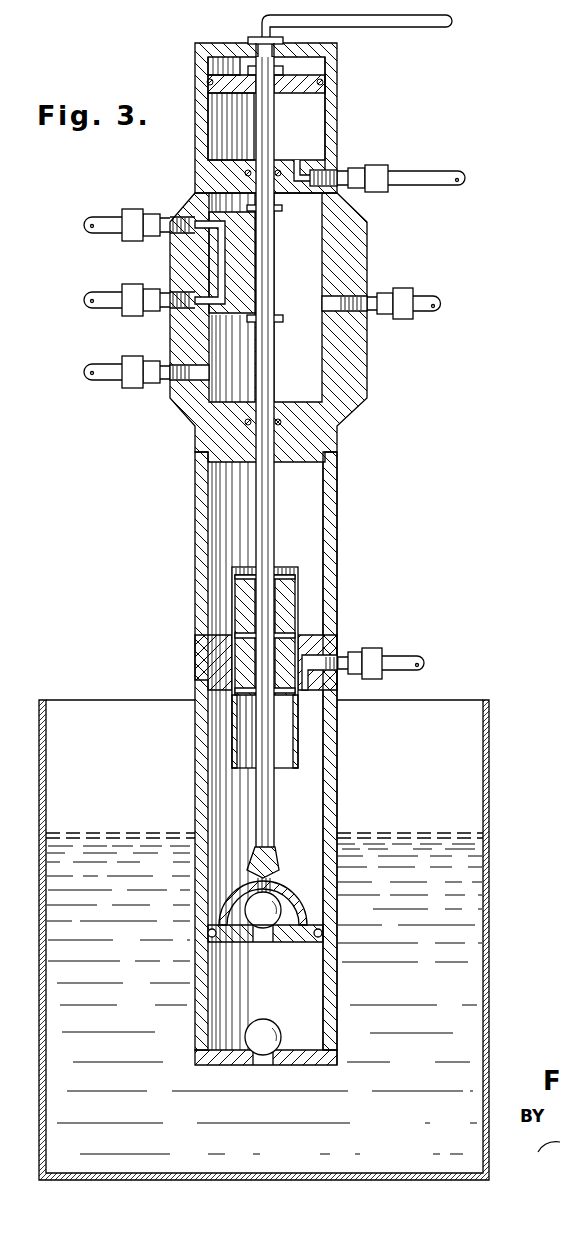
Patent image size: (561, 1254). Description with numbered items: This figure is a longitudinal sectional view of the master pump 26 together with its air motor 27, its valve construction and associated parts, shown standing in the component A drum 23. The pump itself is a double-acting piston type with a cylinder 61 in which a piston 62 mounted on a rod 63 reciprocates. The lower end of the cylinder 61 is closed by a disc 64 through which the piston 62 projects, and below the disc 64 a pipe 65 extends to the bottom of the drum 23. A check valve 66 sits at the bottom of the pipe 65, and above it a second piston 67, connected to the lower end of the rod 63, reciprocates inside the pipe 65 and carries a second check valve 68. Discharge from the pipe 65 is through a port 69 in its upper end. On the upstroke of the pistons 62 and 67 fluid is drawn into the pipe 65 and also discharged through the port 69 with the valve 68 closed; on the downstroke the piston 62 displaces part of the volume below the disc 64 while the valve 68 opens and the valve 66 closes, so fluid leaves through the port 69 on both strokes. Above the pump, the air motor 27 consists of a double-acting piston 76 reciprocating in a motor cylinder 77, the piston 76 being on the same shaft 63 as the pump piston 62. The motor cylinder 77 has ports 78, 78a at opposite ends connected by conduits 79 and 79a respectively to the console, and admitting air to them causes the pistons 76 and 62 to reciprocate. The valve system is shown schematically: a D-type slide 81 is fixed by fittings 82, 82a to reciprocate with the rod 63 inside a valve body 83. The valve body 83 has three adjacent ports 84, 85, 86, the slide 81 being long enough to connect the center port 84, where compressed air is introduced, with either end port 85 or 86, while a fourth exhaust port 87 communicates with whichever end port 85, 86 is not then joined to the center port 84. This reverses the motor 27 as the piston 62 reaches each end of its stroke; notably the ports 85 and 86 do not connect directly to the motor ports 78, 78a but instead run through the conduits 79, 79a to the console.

The component A drum 23 is at (490, 915).
The master pump 26 is at (342, 559).
The air motor 27 is at (342, 114).
The cylinder 61 is at (338, 610).
The piston 62 is at (237, 660).
The rod 63 is at (268, 554).
The disc 64 is at (209, 662).
The pipe 65 is at (334, 800).
The check valve 66 is at (273, 1030).
The second piston 67 is at (316, 928).
The second check valve 68 is at (278, 903).
The port 69 is at (341, 658).
The double-acting piston 76 is at (231, 126).
The motor cylinder 77 is at (332, 144).
The port 78 is at (296, 162).
The port 78a is at (260, 53).
The conduit 79 is at (437, 173).
The conduit 79a is at (394, 26).
The D-type slide 81 is at (248, 268).
The fitting 82 is at (270, 322).
The fitting 82a is at (272, 211).
The valve body 83 is at (367, 378).
The center port 84 is at (194, 310).
The end port 85 is at (175, 388).
The end port 86 is at (195, 233).
The exhaust port 87 is at (365, 299).